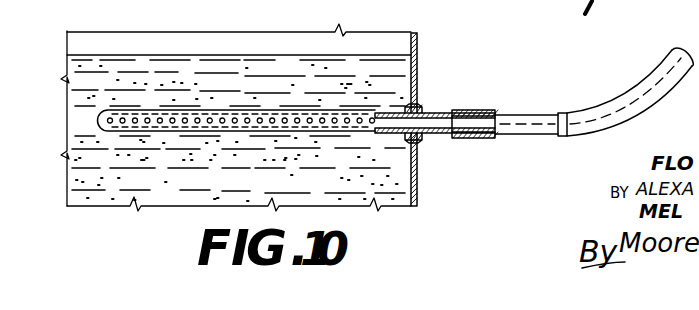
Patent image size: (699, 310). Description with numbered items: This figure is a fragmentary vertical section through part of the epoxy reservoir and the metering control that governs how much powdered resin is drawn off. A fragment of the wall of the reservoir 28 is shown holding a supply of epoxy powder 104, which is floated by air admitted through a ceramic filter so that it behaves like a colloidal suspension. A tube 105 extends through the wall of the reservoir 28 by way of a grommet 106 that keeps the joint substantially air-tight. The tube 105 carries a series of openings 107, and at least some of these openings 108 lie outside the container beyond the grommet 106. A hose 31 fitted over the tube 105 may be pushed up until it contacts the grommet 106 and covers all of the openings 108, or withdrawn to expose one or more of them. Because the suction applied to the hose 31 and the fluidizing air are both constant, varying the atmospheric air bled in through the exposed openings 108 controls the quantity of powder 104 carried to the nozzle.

The epoxy powder 104 is at (278, 72).
The reservoir wall 28 is at (418, 48).
The tube 105 is at (356, 131).
The openings 107 is at (246, 118).
The grommet 106 is at (422, 108).
The outside openings 108 is at (443, 110).
The hose 31 is at (641, 85).